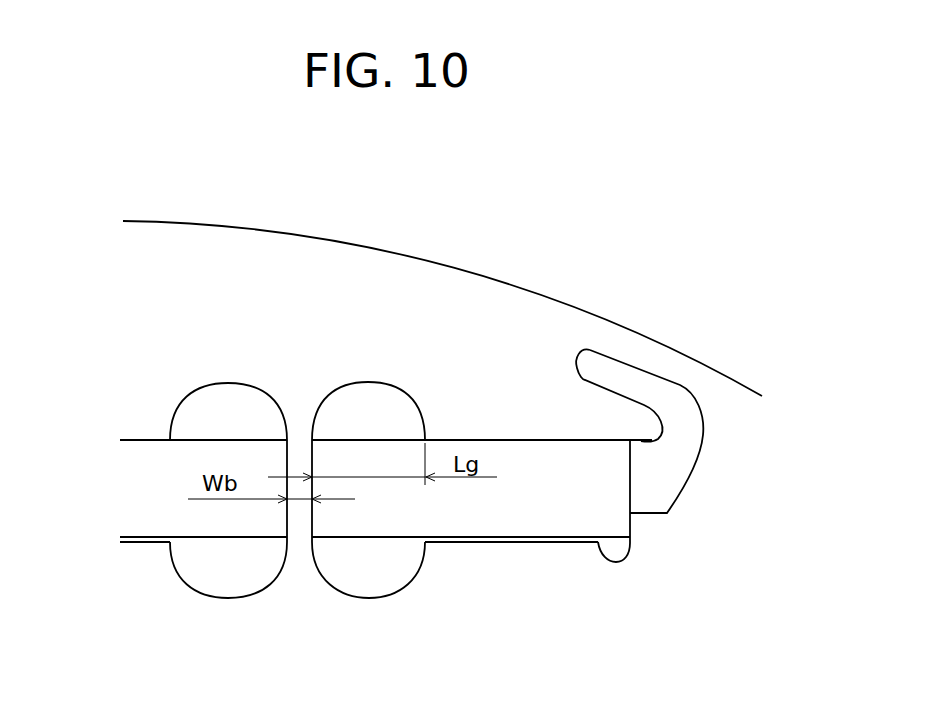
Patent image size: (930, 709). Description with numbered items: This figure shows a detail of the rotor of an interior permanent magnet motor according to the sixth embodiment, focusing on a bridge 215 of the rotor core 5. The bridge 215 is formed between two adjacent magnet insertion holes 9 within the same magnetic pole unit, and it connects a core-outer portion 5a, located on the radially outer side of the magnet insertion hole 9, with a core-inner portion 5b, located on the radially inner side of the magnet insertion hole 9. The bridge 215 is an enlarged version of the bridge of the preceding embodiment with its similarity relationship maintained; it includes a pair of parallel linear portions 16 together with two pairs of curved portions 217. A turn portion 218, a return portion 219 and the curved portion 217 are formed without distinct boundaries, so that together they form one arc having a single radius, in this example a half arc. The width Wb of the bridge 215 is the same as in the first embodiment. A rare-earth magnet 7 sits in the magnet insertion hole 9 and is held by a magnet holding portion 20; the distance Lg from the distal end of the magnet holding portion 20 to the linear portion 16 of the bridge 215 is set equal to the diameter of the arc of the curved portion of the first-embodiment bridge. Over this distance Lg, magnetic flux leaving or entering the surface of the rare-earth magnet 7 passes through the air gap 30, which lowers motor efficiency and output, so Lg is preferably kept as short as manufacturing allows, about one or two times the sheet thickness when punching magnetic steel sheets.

The rotor core 5 is at (610, 183).
The core-outer portion 5a is at (487, 373).
The core-inner portion 5b is at (532, 583).
The rare-earth magnet 7 is at (595, 508).
The magnet insertion hole 9 is at (644, 474).
The linear portion 16 is at (287, 505).
The magnet holding portion 20 is at (153, 440).
The air gap 30 is at (230, 432).
The bridge 215 is at (297, 442).
The curved portion 217 is at (320, 409).
The turn portion 218 is at (368, 387).
The return portion 219 is at (423, 412).